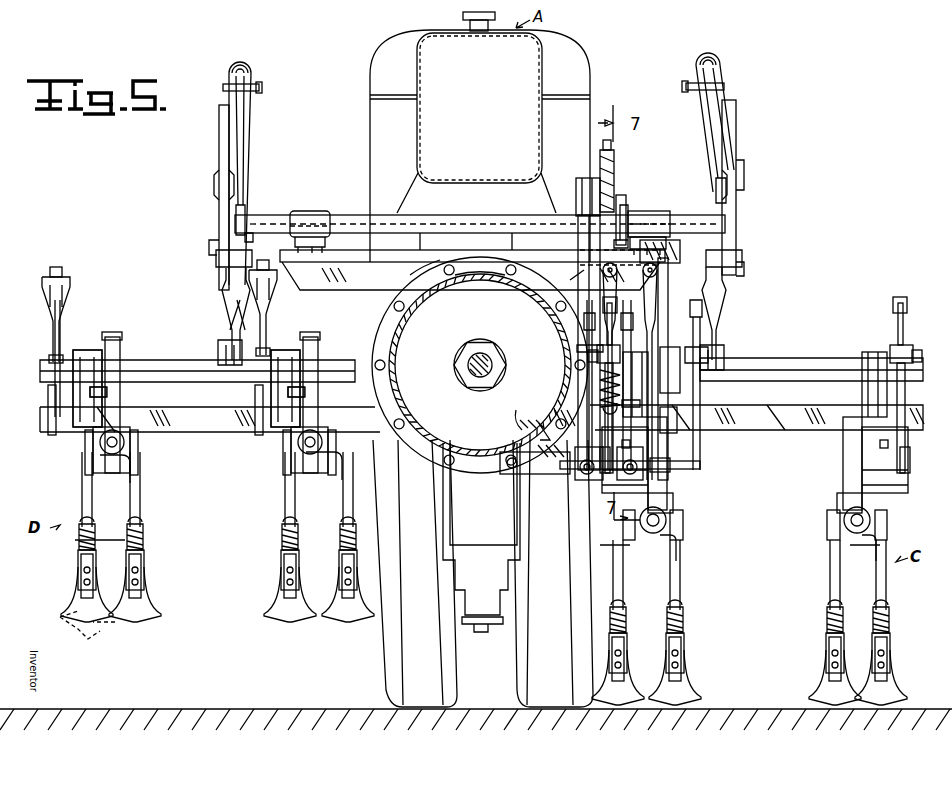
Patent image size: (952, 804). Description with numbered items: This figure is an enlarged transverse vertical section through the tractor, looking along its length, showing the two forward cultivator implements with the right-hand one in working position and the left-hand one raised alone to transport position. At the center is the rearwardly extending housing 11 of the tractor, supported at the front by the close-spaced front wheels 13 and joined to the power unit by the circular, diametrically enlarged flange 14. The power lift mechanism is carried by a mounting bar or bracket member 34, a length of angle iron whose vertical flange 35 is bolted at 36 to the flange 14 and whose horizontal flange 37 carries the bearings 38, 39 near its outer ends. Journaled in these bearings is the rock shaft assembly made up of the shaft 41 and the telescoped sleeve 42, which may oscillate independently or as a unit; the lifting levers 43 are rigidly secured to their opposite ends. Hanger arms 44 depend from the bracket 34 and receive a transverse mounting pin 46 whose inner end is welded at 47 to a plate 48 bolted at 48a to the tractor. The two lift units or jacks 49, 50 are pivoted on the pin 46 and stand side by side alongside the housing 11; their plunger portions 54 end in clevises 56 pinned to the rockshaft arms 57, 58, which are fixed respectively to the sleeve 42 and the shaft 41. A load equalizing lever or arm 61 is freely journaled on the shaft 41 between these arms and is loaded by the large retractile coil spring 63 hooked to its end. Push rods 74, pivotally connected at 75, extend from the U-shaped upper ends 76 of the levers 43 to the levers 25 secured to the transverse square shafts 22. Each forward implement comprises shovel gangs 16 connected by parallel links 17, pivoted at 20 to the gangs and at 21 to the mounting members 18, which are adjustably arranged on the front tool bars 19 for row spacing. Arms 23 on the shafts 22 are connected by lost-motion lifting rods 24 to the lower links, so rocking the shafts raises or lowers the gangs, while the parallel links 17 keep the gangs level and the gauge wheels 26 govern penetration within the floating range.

The housing 11 is at (393, 352).
The front wheels 13 is at (512, 653).
The flange 14 is at (504, 294).
The shovel gangs 16 is at (146, 486).
The parallel links 17 is at (92, 370).
The mounting members 18 is at (83, 348).
The tool bars 19 is at (194, 433).
The pivotal connection 20 is at (118, 338).
The pivotal connection 21 is at (107, 392).
The transverse square shafts 22 is at (187, 362).
The arms 23 is at (70, 305).
The lost-motion lifting rods 24 is at (66, 266).
The levers 25 is at (234, 308).
The gauge wheels 26 is at (72, 556).
The mounting bar or bracket member 34 is at (336, 252).
The vertical flange 35 is at (410, 278).
The bolts 36 is at (492, 280).
The horizontal flange 37 is at (436, 255).
The bearing 38 is at (316, 210).
The bearing 39 is at (663, 212).
The shaft 41 is at (474, 216).
The sleeve 42 is at (706, 218).
The lifting levers 43 is at (219, 158).
The hanger arms 44 is at (606, 366).
The mounting pin 46 is at (672, 465).
The weld 47 is at (560, 474).
The plate 48 is at (525, 466).
The bolts 48a is at (540, 418).
The lift unit or jack 49 is at (570, 323).
The lift unit or jack 50 is at (652, 350).
The plunger portions 54 is at (578, 240).
The clevises 56 is at (578, 196).
The rockshaft arm 57 is at (580, 186).
The rockshaft arm 58 is at (635, 212).
The load equalizing lever or arm 61 is at (615, 168).
The retractile coil spring 63 is at (600, 386).
The push rods 74 is at (247, 126).
The pivot connection 75 is at (262, 87).
The U-shaped upper ends 76 is at (248, 66).